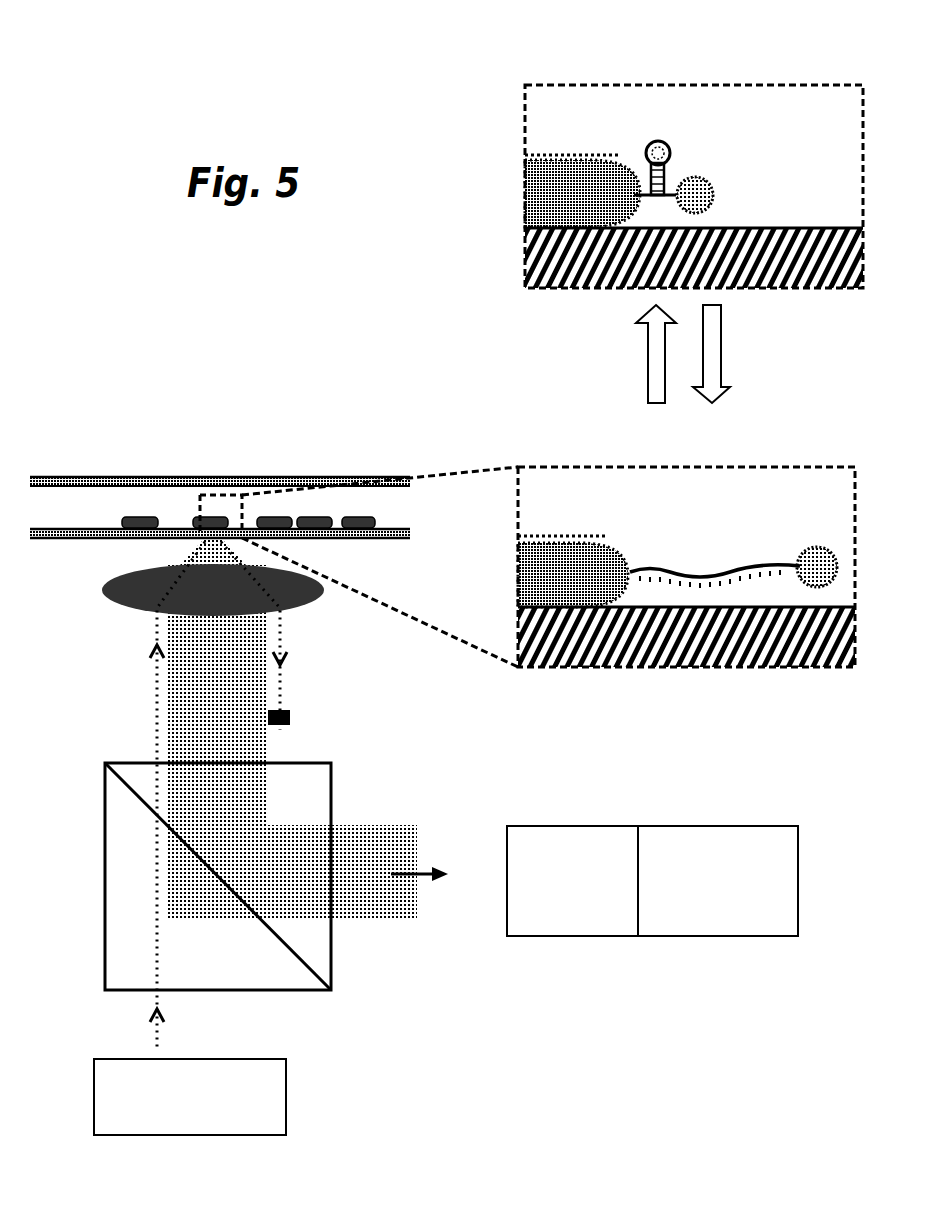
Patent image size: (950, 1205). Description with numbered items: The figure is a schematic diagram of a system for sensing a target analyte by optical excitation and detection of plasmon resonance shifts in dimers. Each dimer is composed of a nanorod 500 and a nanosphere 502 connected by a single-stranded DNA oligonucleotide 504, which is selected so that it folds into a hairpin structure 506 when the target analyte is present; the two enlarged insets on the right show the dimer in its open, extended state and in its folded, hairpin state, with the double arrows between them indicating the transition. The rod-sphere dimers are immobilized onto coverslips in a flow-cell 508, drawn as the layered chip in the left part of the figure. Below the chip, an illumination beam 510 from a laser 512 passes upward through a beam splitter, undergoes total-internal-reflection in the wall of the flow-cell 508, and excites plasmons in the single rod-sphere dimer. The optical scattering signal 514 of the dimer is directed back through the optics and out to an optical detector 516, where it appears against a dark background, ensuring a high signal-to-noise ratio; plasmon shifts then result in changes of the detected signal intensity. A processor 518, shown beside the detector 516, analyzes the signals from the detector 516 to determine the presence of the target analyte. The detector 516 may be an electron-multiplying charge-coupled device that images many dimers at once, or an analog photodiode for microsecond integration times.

The nanorod 500 is at (213, 517).
The nanosphere 502 is at (817, 548).
The single-stranded DNA oligonucleotide 504 is at (727, 567).
The hairpin structure 506 is at (658, 140).
The flow-cell 508 is at (152, 477).
The illumination beam 510 is at (157, 718).
The laser 512 is at (151, 1096).
The optical scattering signal 514 is at (428, 862).
The optical detector 516 is at (565, 866).
The processor 518 is at (695, 866).